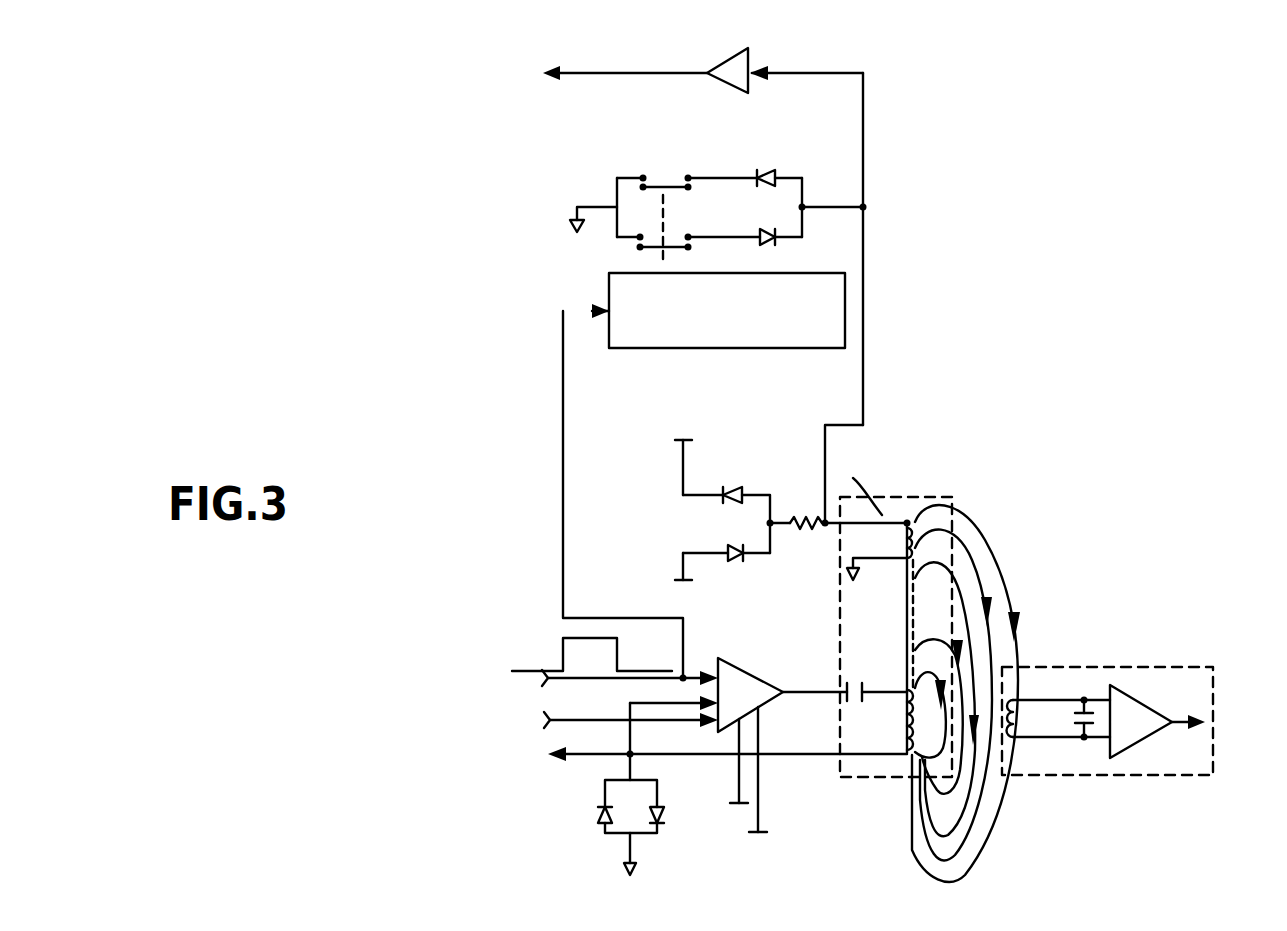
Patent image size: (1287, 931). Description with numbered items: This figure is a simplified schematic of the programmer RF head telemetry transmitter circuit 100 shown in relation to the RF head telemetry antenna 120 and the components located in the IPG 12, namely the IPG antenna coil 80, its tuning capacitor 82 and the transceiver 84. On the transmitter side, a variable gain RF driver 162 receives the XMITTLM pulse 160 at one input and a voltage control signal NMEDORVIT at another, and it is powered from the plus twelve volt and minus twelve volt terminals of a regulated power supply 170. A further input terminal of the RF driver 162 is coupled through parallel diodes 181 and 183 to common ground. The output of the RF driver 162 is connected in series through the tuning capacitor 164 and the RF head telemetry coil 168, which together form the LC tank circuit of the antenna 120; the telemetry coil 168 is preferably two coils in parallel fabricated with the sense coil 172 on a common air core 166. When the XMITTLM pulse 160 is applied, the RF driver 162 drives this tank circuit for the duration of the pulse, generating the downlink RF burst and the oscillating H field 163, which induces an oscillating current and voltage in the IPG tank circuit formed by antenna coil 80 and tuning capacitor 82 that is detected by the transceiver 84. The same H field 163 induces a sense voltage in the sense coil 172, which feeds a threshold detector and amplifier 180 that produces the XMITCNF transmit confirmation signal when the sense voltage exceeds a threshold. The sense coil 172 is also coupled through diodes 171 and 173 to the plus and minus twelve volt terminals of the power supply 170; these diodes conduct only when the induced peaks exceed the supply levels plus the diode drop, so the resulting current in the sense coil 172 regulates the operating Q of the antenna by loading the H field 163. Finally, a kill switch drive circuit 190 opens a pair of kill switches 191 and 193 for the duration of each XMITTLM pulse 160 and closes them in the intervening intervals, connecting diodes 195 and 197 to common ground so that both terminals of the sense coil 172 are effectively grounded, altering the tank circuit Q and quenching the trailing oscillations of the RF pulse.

The IPG 12 is at (1198, 776).
The IPG antenna coil 80 is at (1015, 728).
The tuning capacitor 82 is at (1086, 725).
The transceiver 84 is at (1135, 705).
The telemetry transmitter circuit 100 is at (507, 549).
The RF head telemetry antenna 120 is at (930, 497).
The XMITTLM pulse 160 is at (562, 663).
The variable gain RF driver 162 is at (750, 683).
The oscillating H field 163 is at (975, 580).
The tuning capacitor 164 is at (840, 698).
The common air core 166 is at (905, 672).
The RF head telemetry coil 168 is at (905, 736).
The regulated power supply 170 is at (680, 485).
The diode 171 is at (733, 487).
The sense coil 172 is at (905, 497).
The diode 173 is at (737, 548).
The threshold detector and amplifier 180 is at (750, 57).
The diode 181 is at (598, 810).
The diode 183 is at (665, 835).
The kill switch drive circuit 190 is at (609, 290).
The kill switch 191 is at (662, 186).
The kill switch 193 is at (672, 246).
The diode 195 is at (758, 170).
The diode 197 is at (777, 243).